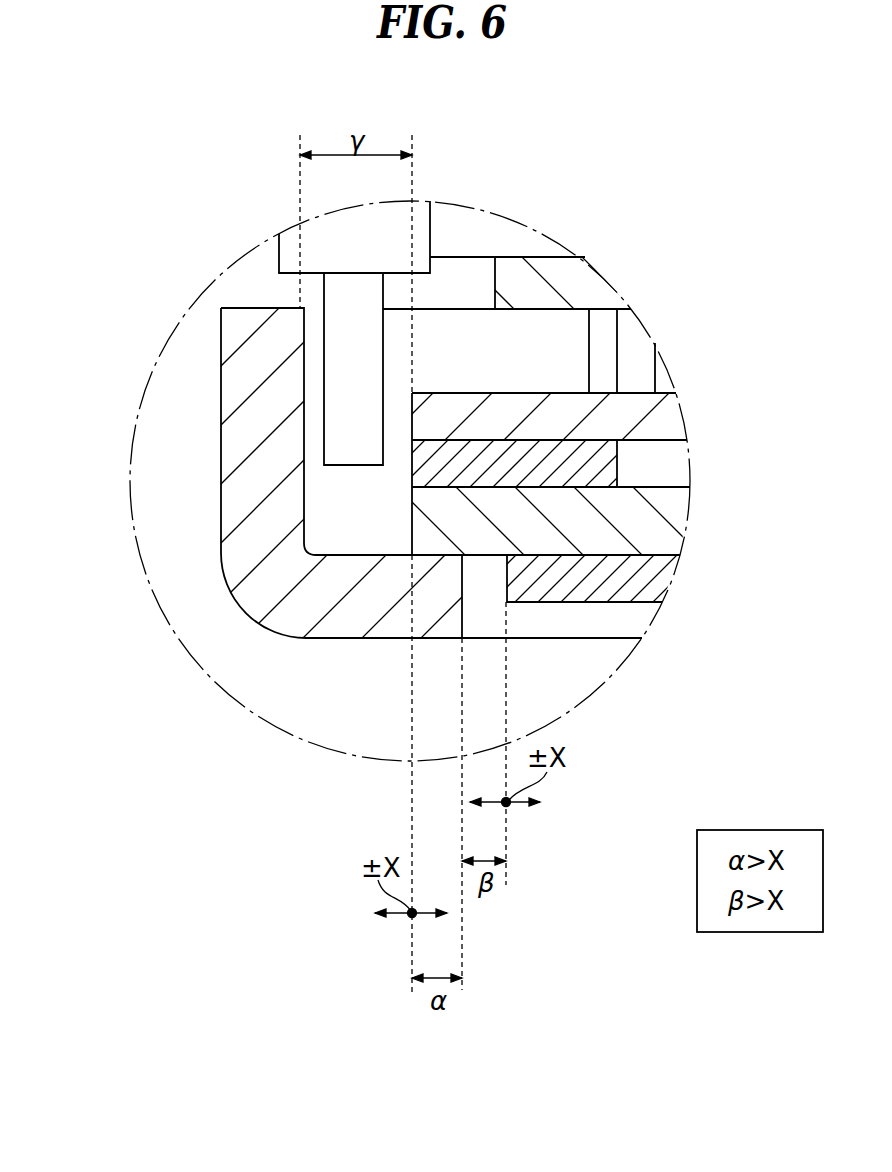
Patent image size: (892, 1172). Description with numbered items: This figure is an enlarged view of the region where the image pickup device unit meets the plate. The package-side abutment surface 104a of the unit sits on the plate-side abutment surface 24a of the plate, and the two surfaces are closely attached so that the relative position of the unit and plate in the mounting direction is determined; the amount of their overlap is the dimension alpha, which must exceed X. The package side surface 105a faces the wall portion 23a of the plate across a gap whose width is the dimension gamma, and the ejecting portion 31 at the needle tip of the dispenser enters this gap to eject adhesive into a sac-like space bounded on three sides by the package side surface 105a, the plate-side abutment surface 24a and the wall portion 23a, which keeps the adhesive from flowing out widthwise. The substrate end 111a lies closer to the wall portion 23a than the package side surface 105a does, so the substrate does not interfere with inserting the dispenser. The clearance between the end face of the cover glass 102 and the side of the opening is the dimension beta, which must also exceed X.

The ejecting portion 31 is at (342, 414).
The wall portion 23a is at (234, 462).
The package side surface 105a is at (413, 477).
The plate-side abutment surface 24a is at (367, 555).
The substrate end 111a is at (496, 275).
The cover glass 102 is at (663, 588).
The package-side abutment surface 104a is at (420, 557).